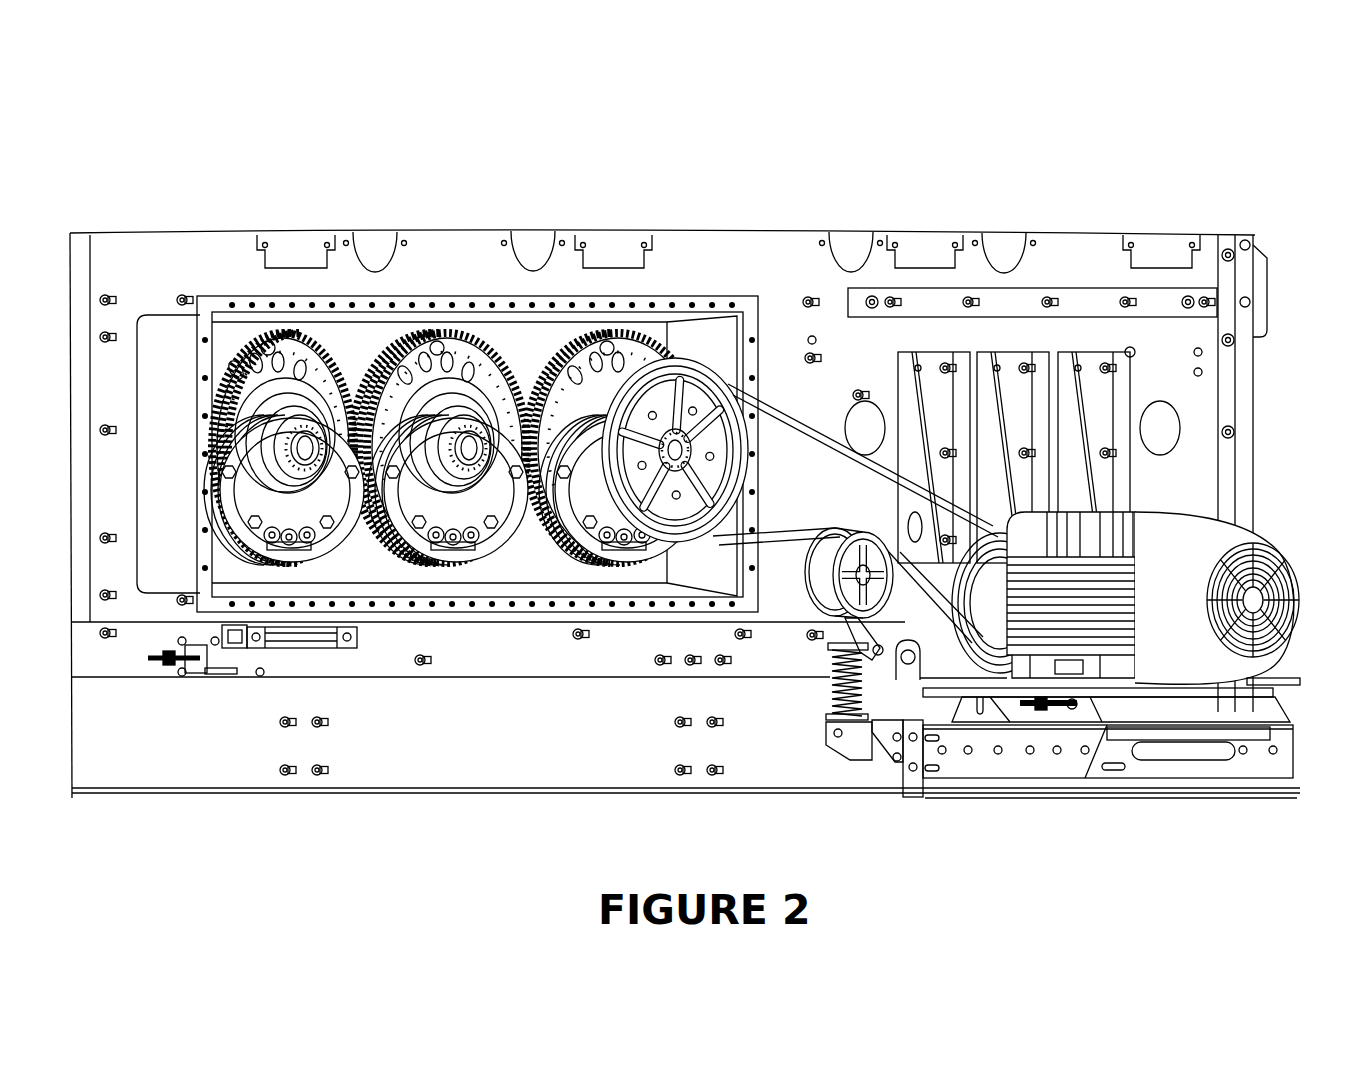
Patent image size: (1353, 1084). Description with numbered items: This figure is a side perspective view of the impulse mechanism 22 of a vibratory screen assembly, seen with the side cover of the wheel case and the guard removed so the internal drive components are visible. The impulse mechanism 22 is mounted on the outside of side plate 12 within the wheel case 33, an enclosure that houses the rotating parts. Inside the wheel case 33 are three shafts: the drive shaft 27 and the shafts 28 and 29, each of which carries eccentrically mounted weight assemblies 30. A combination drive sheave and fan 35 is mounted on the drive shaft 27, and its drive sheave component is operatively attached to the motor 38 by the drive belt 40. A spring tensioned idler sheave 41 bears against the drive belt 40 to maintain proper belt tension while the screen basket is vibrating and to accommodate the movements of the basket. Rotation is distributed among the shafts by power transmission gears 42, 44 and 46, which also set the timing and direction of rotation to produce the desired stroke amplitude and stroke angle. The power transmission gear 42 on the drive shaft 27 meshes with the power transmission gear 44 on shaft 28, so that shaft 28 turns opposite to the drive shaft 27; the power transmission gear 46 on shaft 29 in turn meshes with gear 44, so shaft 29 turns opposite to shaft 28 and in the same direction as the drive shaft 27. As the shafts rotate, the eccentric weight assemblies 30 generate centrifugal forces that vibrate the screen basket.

The impulse mechanism 22 is at (703, 438).
The side plate 12 is at (560, 268).
The wheel case 33 is at (458, 297).
The power transmission gear 46 is at (228, 332).
The power transmission gear 44 is at (370, 336).
The power transmission gear 42 is at (648, 340).
The combination drive sheave and fan 35 is at (688, 367).
The drive shaft 27 is at (687, 452).
The drive belt 40 is at (797, 413).
The weight assemblies 30 is at (232, 500).
The shaft 29 is at (314, 468).
The shaft 28 is at (482, 468).
The spring tensioned idler sheave 41 is at (820, 590).
The motor 38 is at (1195, 548).